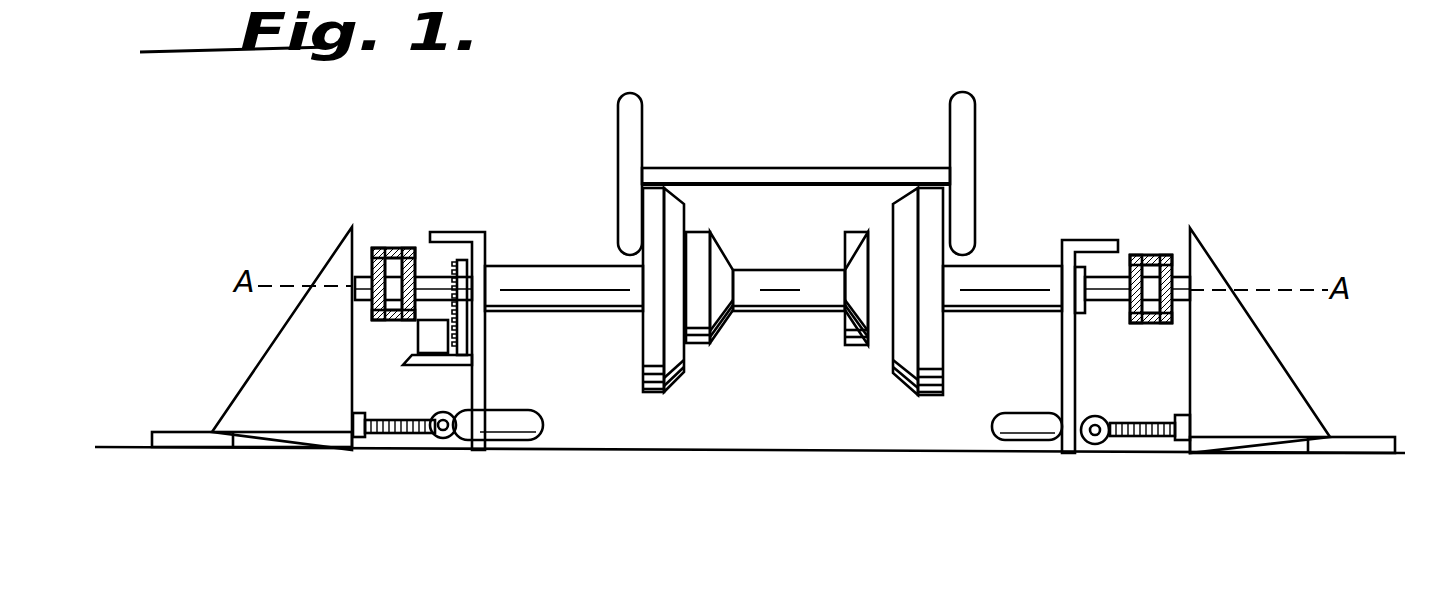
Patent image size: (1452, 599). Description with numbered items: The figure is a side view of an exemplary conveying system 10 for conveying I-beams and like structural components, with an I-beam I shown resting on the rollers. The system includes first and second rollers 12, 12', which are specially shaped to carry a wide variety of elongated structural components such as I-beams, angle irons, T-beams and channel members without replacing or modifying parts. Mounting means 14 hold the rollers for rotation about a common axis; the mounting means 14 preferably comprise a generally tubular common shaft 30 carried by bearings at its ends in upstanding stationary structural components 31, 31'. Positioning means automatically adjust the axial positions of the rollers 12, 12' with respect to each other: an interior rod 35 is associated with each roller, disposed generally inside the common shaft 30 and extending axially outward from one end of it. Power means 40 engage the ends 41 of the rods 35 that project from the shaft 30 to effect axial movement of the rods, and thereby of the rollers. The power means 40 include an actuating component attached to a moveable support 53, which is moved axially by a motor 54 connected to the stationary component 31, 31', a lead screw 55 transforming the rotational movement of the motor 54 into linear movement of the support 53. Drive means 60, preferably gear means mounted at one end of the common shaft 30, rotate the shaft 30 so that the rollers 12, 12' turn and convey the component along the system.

The conveying system 10 is at (1097, 121).
The wheel gauge frame I is at (965, 158).
The first roller 12 is at (688, 309).
The second roller 12' is at (864, 298).
The mounting means 14 is at (491, 231).
The common shaft 30 is at (597, 250).
The upstanding stationary structural component 31 is at (467, 189).
The upstanding stationary structural component 31' is at (1094, 211).
The interior rod 35 is at (437, 277).
The power means 40 is at (318, 243).
The end of rod 41 is at (404, 322).
The moveable support 53 is at (272, 378).
The motor 54 is at (518, 430).
The lead screw 55 is at (405, 433).
The drive means 60 is at (495, 359).